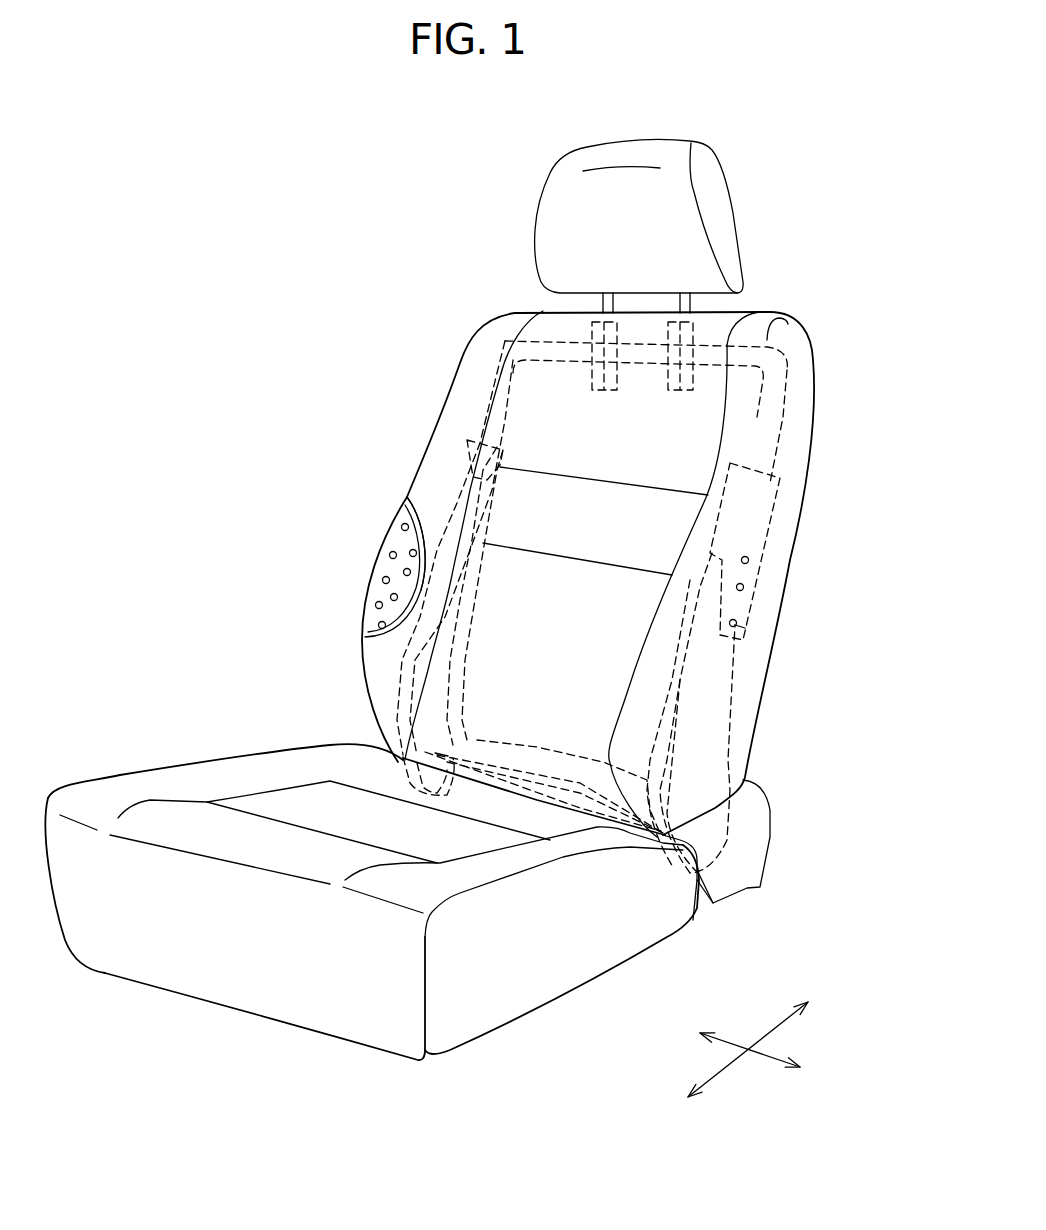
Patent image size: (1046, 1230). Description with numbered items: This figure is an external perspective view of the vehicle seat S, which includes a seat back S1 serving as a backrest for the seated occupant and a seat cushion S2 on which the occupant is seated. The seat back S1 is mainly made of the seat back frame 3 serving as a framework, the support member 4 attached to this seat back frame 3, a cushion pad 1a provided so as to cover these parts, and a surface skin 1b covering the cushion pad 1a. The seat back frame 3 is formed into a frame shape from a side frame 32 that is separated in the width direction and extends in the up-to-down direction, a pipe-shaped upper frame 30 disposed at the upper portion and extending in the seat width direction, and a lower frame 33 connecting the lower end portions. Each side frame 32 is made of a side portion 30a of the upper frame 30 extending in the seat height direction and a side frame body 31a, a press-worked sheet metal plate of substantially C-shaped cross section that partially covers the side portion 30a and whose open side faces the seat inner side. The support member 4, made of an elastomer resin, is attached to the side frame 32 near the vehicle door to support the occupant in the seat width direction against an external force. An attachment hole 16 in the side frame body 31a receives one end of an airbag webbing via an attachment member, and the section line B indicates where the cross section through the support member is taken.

The vehicle seat S is at (201, 222).
The seat back S1 is at (305, 542).
The seat cushion S2 is at (184, 740).
The seat back frame 3 is at (795, 385).
The upper frame 30 is at (546, 330).
The side portion 30a is at (487, 390).
The side frame body 31a is at (453, 503).
The side frame 32 is at (365, 348).
The lower frame 33 is at (540, 758).
The support member 4 is at (747, 517).
The attachment hole 16 is at (710, 633).
The cushion pad 1a is at (373, 595).
The surface skin 1b is at (400, 517).
The section line B- B is at (800, 658).